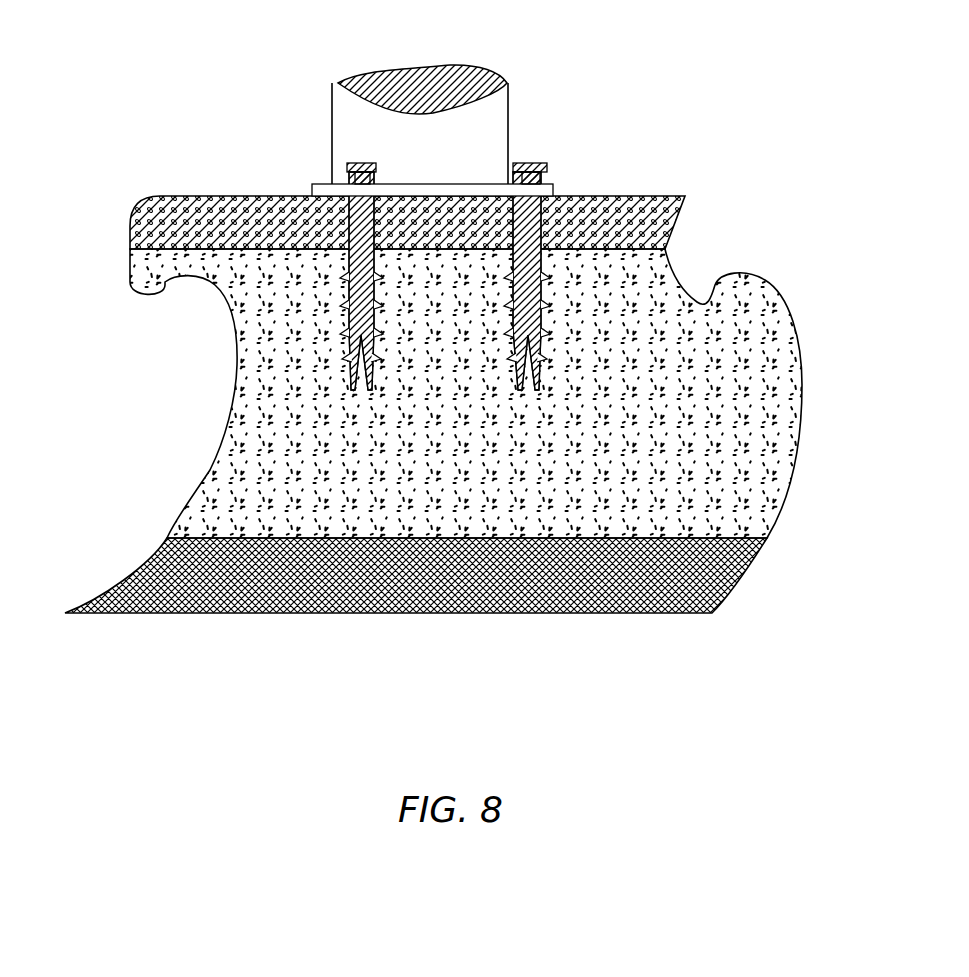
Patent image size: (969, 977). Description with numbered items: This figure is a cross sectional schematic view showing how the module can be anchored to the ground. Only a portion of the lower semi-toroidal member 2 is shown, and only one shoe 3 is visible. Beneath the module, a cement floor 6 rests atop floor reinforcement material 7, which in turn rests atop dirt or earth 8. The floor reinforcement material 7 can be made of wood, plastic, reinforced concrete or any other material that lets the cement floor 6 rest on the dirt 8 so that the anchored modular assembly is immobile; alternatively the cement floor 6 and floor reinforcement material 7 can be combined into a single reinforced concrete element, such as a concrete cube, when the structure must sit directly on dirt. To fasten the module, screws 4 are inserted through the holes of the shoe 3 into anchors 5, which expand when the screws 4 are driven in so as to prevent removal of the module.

The lower semi-toroidal member 2 is at (322, 103).
The shoe 3 is at (455, 172).
The screws 4 is at (340, 163).
The anchors 5 is at (327, 315).
The cement floor 6 is at (623, 185).
The floor reinforcement material 7 is at (205, 448).
The dirt 8 is at (295, 625).